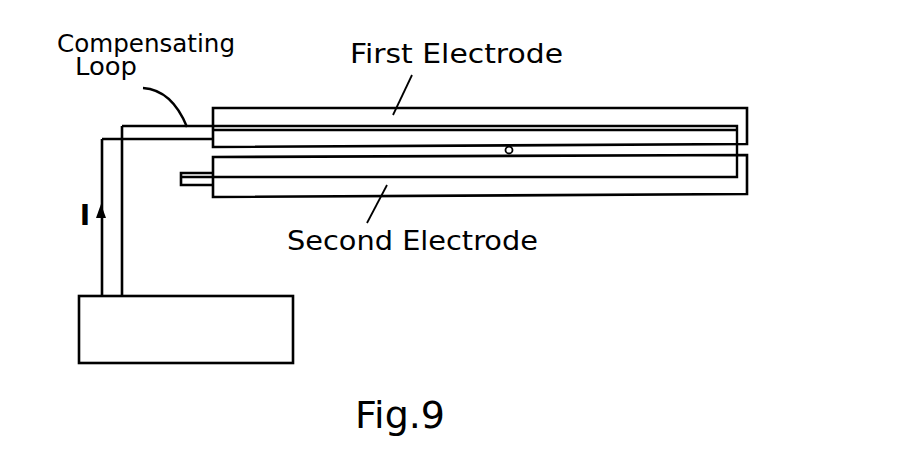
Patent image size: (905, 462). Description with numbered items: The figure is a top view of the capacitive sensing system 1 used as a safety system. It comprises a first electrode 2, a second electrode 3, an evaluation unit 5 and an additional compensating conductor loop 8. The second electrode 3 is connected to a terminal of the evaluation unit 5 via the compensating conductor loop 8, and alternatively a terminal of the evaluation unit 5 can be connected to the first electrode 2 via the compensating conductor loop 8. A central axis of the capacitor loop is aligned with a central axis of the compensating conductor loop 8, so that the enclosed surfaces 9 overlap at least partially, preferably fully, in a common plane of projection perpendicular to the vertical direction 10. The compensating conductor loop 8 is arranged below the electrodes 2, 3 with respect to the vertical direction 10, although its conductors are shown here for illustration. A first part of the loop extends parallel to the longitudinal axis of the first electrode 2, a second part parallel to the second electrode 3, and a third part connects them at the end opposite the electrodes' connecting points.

The capacitive sensing system 1 is at (426, 216).
The first electrode 2 is at (619, 105).
The second electrode 3 is at (610, 194).
The evaluation unit 5 is at (293, 335).
The compensating conductor loop 8 is at (189, 126).
The enclosed surfaces 9 is at (708, 150).
The vertical direction 10 is at (512, 146).